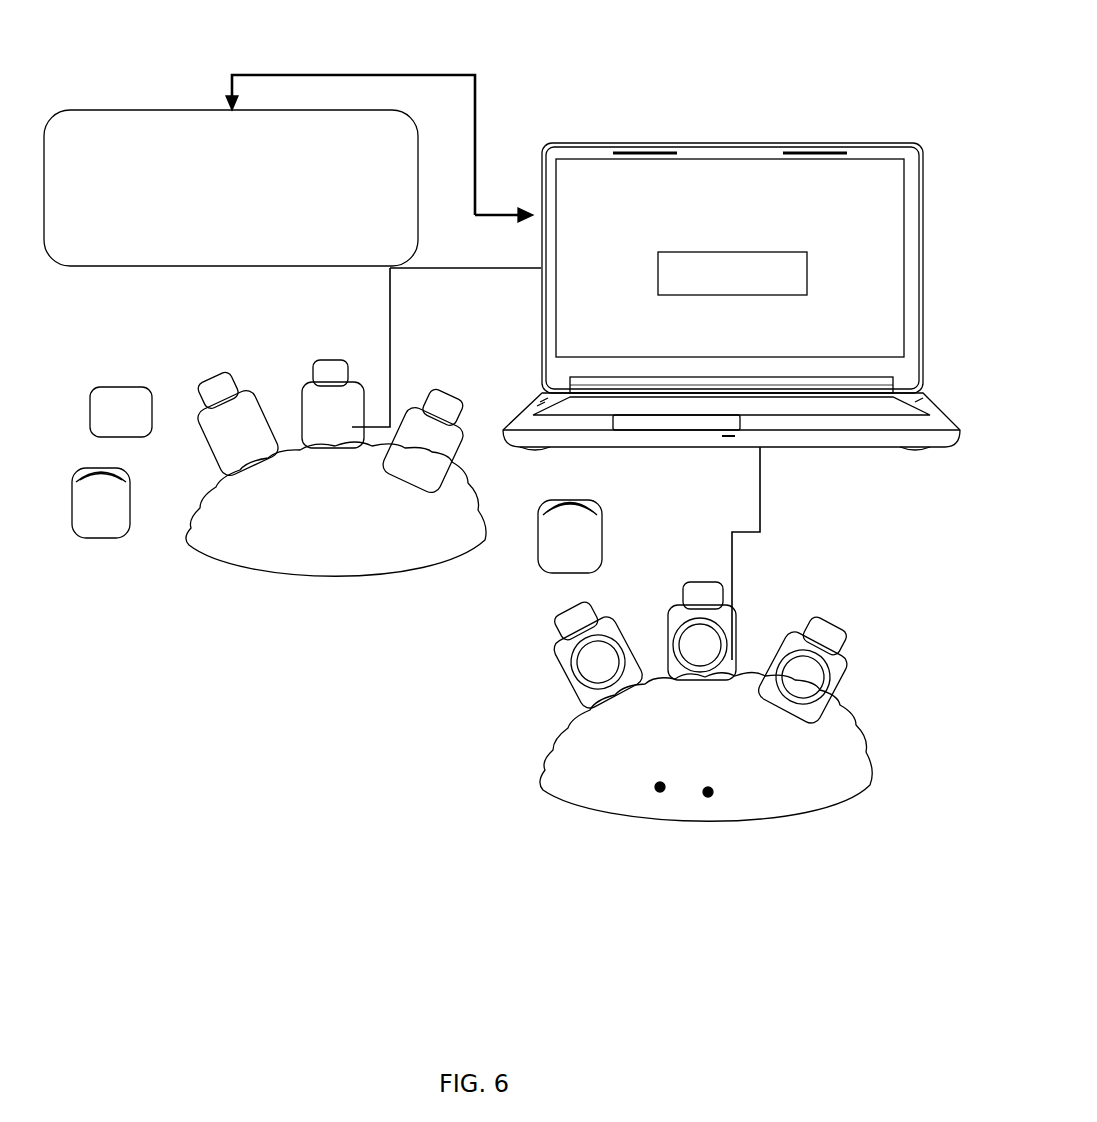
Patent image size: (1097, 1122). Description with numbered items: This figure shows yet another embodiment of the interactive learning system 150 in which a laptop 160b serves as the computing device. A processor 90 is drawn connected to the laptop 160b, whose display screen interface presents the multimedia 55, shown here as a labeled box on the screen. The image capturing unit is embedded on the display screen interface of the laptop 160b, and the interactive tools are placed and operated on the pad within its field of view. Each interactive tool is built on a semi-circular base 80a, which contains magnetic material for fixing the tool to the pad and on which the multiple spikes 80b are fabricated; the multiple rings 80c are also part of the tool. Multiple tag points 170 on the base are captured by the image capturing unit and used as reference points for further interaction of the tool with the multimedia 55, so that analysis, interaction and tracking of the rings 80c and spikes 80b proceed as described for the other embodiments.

The processor 90 is at (70, 111).
The interactive learning system 150 is at (828, 87).
The laptop 160b is at (710, 163).
The multimedia 55 is at (704, 252).
The semi-circular base 80a is at (248, 537).
The multiple spikes 80b is at (244, 393).
The multiple rings 80c is at (317, 398).
The multiple tag points 170 is at (704, 800).